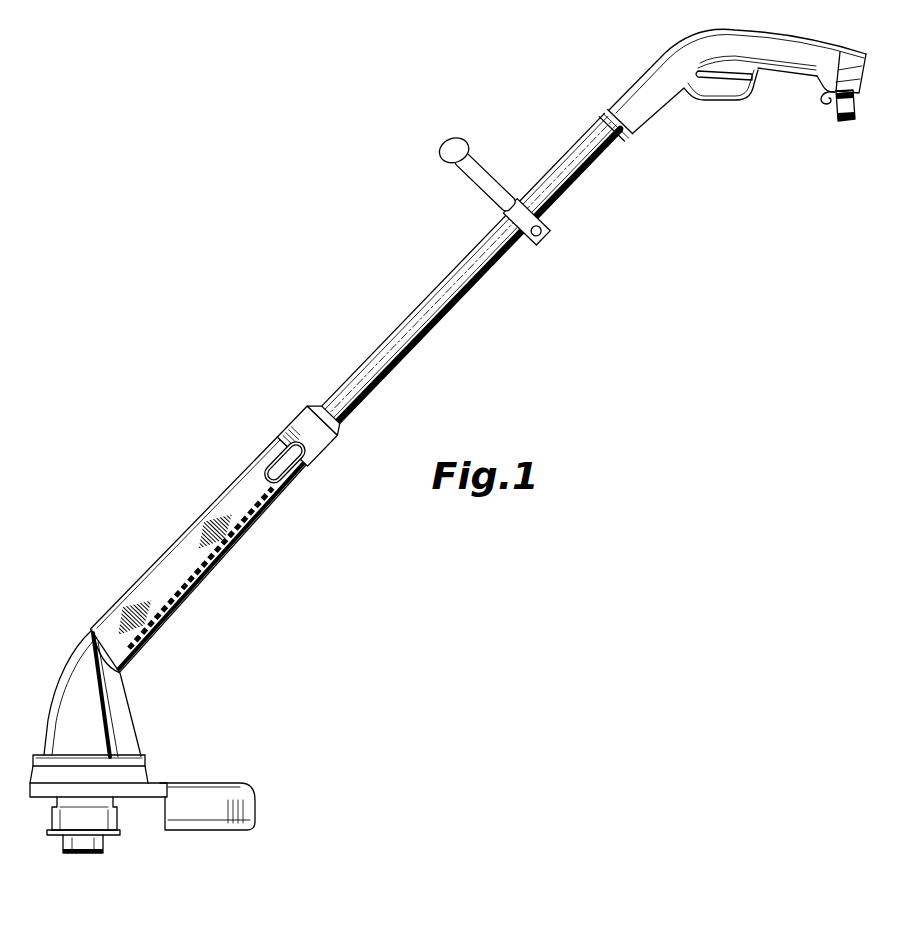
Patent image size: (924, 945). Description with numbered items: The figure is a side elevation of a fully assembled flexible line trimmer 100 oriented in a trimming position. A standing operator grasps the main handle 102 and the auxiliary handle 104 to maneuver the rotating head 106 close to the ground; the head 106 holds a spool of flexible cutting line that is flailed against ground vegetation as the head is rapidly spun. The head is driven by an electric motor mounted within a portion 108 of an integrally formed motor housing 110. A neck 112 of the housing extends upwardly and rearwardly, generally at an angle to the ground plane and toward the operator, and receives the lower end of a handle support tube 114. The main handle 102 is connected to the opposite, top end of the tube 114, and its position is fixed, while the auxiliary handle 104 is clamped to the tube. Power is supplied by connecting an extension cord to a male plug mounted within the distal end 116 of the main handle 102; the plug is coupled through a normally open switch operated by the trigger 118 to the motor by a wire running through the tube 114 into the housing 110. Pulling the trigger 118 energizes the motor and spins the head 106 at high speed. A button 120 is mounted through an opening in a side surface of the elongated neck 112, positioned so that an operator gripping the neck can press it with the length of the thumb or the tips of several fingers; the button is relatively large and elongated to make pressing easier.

The flexible line trimmer 100 is at (382, 300).
The main handle 102 is at (634, 86).
The auxiliary handle 104 is at (445, 148).
The rotating head 106 is at (150, 865).
The portion of motor housing 108 is at (62, 662).
The motor housing 110 is at (316, 607).
The neck 112 is at (183, 527).
The handle support tube 114 is at (490, 348).
The distal end of main handle 116 is at (860, 160).
The trigger 118 is at (733, 167).
The button 120 is at (280, 458).